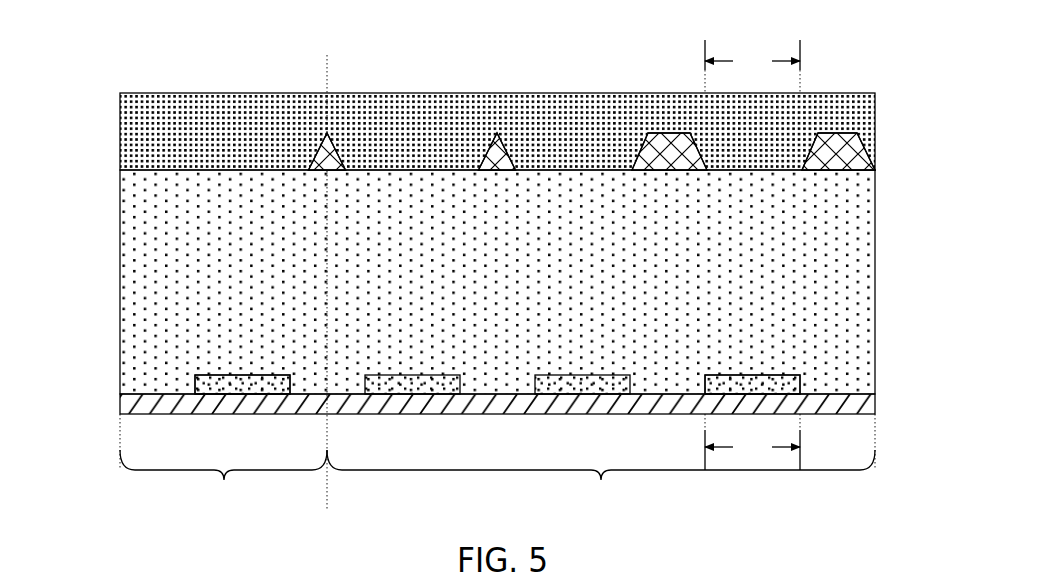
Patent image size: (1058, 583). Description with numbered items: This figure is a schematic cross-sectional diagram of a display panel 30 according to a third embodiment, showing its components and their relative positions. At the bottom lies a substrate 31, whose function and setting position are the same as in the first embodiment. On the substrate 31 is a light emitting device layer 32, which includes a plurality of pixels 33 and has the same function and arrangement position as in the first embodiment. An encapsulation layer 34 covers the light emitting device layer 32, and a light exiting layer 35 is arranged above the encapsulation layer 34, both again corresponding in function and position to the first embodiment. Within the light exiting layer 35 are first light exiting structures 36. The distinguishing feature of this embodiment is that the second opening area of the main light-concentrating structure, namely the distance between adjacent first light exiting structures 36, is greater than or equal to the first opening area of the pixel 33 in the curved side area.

The display panel 30 is at (68, 36).
The substrate 31 is at (875, 394).
The light emitting device layer 32 is at (102, 376).
The pixels 33 is at (752, 375).
The encapsulation layer 34 is at (875, 273).
The light exiting layer 35 is at (895, 93).
The first light exiting structures 36 is at (850, 168).